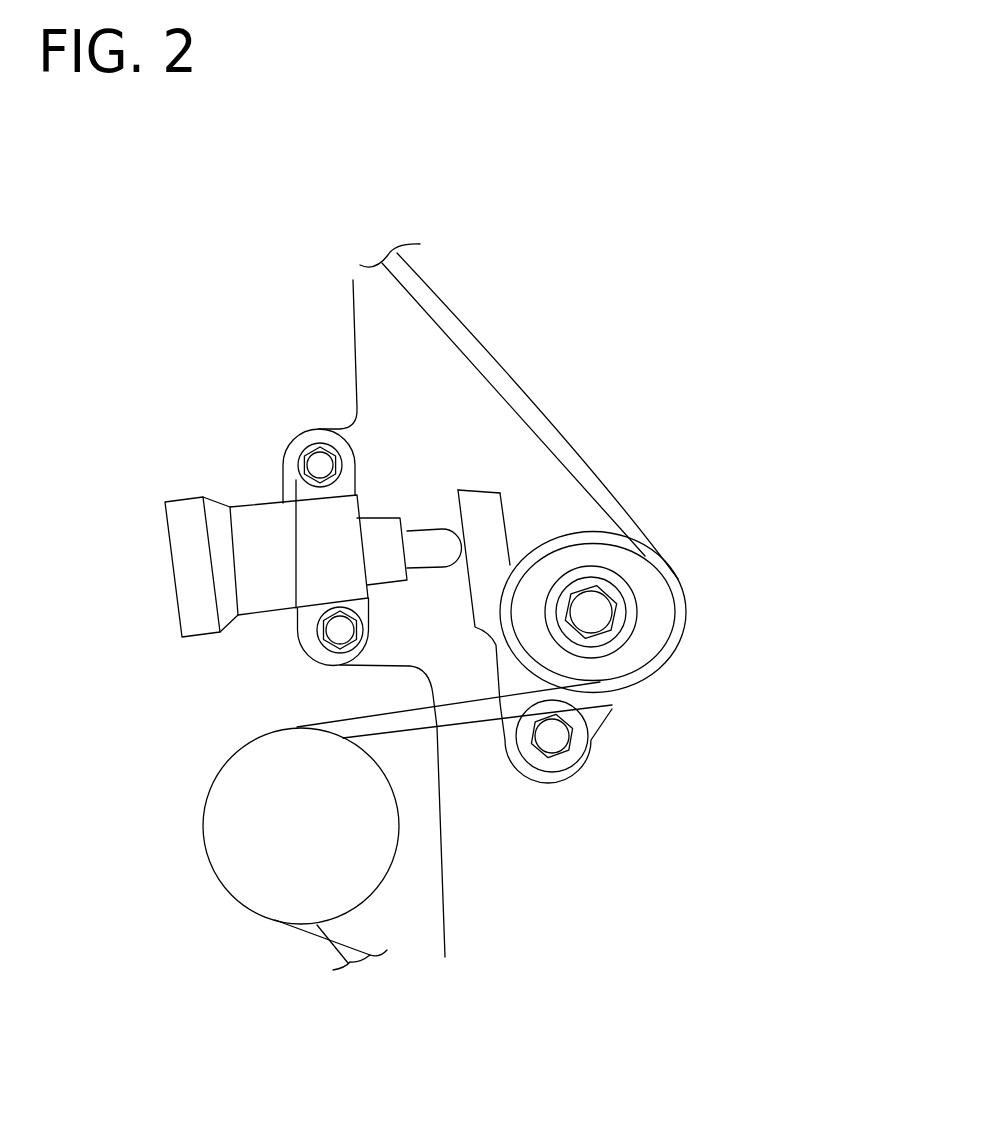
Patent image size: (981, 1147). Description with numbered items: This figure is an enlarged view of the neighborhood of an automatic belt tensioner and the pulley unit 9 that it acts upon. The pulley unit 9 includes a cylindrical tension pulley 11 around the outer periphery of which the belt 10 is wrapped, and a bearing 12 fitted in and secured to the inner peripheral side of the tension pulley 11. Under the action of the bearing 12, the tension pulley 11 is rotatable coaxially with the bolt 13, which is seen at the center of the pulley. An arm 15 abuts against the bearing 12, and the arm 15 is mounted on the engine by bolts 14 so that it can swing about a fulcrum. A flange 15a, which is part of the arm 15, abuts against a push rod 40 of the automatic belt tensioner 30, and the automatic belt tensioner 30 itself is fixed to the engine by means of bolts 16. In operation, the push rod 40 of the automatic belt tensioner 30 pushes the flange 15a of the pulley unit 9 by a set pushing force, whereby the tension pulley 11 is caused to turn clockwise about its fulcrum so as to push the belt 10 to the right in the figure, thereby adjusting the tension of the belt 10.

The pulley unit 9 is at (623, 543).
The belt 10 is at (475, 333).
The tension pulley 11 is at (655, 561).
The bearing 12 is at (627, 647).
The bolt 13 is at (592, 610).
The bolts 14 is at (558, 740).
The arm 15 is at (525, 597).
The flange 15a is at (486, 490).
The bolts 16 is at (322, 465).
The automatic belt tensioner 30 is at (202, 493).
The push rod 40 is at (437, 530).